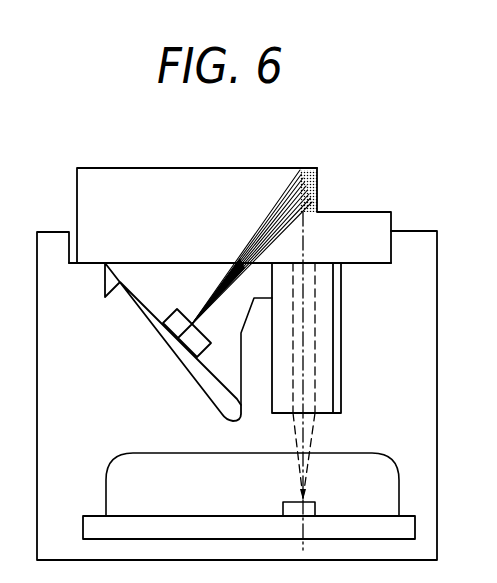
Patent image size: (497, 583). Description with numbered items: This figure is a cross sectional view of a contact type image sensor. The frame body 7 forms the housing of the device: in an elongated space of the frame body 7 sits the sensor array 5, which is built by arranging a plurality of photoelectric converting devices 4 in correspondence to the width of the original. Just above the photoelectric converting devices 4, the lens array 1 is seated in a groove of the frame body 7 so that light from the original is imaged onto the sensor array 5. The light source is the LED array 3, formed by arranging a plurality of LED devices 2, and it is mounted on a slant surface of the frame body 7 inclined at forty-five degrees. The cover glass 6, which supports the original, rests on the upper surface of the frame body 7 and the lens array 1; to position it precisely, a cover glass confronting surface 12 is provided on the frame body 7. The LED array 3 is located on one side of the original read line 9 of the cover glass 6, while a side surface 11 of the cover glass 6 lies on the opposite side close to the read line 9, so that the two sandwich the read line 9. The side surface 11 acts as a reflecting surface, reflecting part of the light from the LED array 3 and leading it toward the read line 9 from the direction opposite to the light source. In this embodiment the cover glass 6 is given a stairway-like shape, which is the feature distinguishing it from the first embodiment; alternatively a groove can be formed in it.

The lens array 1 is at (323, 297).
The LED devices 2 is at (177, 309).
The LED array 3 is at (125, 287).
The photoelectric converting devices 4 is at (287, 508).
The sensor array 5 is at (407, 528).
The cover glass 6 is at (192, 168).
The frame body 7 is at (422, 334).
The read line 9 is at (301, 168).
The side surface 11 is at (320, 180).
The cover glass confronting surface 12 is at (392, 230).